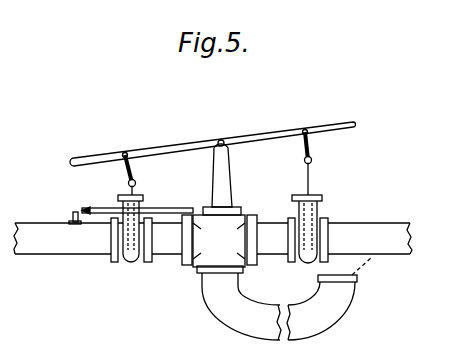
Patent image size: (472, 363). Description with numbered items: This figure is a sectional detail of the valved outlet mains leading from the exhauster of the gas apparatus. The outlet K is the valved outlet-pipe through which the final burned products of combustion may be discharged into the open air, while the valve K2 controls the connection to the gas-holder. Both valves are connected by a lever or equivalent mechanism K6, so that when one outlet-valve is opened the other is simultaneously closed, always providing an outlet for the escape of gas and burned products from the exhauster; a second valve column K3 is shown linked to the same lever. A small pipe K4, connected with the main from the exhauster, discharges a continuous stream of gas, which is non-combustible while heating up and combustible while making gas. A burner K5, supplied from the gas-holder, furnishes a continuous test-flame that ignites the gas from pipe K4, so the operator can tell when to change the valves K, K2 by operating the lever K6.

The valved outlet K is at (262, 307).
The valve K2 is at (122, 206).
The valve column with link K3 is at (316, 214).
The small pipe K4 is at (152, 211).
The burner K5 is at (73, 213).
The lever K6 is at (276, 133).